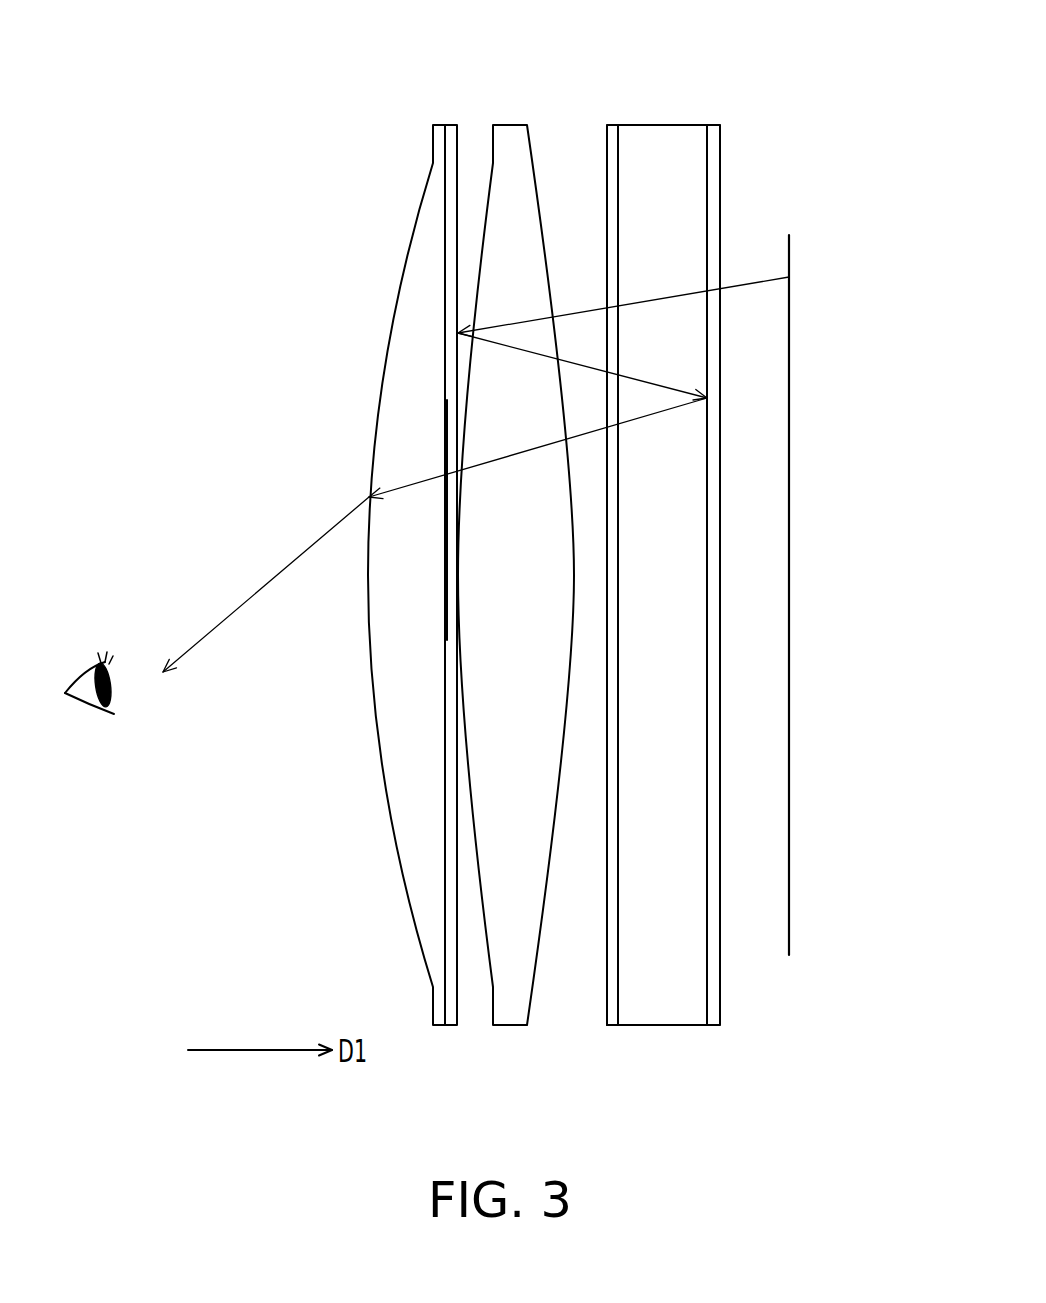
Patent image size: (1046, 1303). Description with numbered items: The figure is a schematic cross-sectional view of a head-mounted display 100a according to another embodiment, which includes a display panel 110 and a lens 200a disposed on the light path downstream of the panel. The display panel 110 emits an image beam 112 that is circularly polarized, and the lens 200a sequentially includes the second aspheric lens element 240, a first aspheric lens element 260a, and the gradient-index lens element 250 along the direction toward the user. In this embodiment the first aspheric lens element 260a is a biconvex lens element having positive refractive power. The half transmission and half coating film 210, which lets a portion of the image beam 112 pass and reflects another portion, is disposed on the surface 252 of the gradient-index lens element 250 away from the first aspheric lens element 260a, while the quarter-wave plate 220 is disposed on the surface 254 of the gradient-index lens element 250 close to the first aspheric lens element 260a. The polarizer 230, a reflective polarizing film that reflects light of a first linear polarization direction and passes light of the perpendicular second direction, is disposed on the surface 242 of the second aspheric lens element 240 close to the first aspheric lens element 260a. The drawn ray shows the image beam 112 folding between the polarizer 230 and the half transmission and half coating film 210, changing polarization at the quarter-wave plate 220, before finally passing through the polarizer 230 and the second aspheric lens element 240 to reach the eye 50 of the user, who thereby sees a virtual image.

The eye 50 is at (90, 705).
The head-mounted display 100a is at (935, 1060).
The display panel 110 is at (790, 597).
The image beam 112 is at (752, 278).
The lens 200a is at (743, 995).
The half transmission and half coating film 210 is at (713, 148).
The quarter-wave plate 220 is at (610, 148).
The polarizer 230 is at (453, 150).
The second aspheric lens element 240 is at (418, 857).
The surface 242 is at (448, 519).
The gradient-index lens element 250 is at (657, 998).
The surface 252 is at (707, 720).
The surface 254 is at (608, 904).
The first aspheric lens element 260a is at (513, 1000).